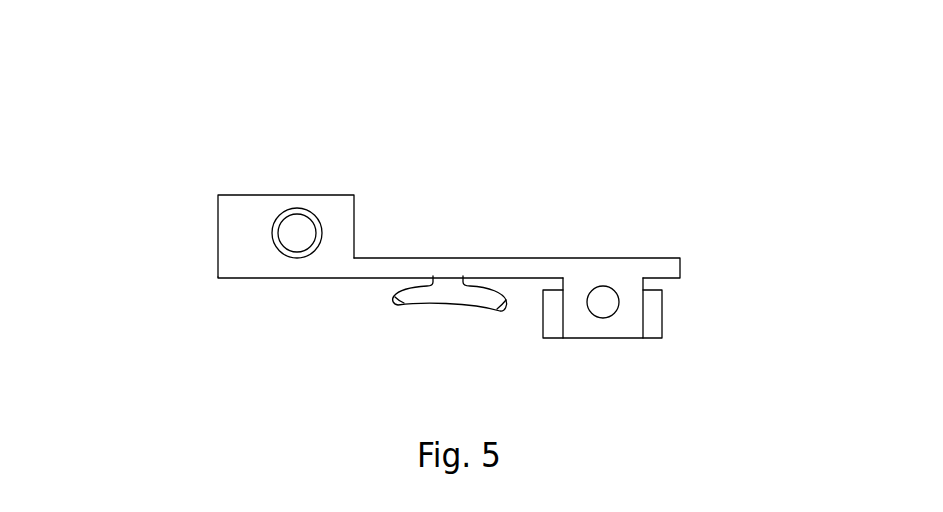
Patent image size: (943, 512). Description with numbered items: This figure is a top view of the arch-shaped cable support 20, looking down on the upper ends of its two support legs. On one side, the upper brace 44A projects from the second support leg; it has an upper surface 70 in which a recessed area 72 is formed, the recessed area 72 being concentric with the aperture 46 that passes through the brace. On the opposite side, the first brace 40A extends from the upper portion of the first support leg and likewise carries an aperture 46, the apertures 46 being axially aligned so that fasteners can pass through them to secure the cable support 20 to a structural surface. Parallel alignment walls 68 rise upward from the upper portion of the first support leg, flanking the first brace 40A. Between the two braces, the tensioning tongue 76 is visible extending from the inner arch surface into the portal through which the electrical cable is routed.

The arch-shaped cable support 20 is at (182, 114).
The upper brace 44A is at (218, 198).
The upper surface 70 is at (258, 230).
The recessed area 72 is at (315, 212).
The aperture 46 is at (296, 233).
The tensioning tongue 76 is at (407, 305).
The first brace 40A is at (630, 329).
The alignment walls 68 is at (649, 322).